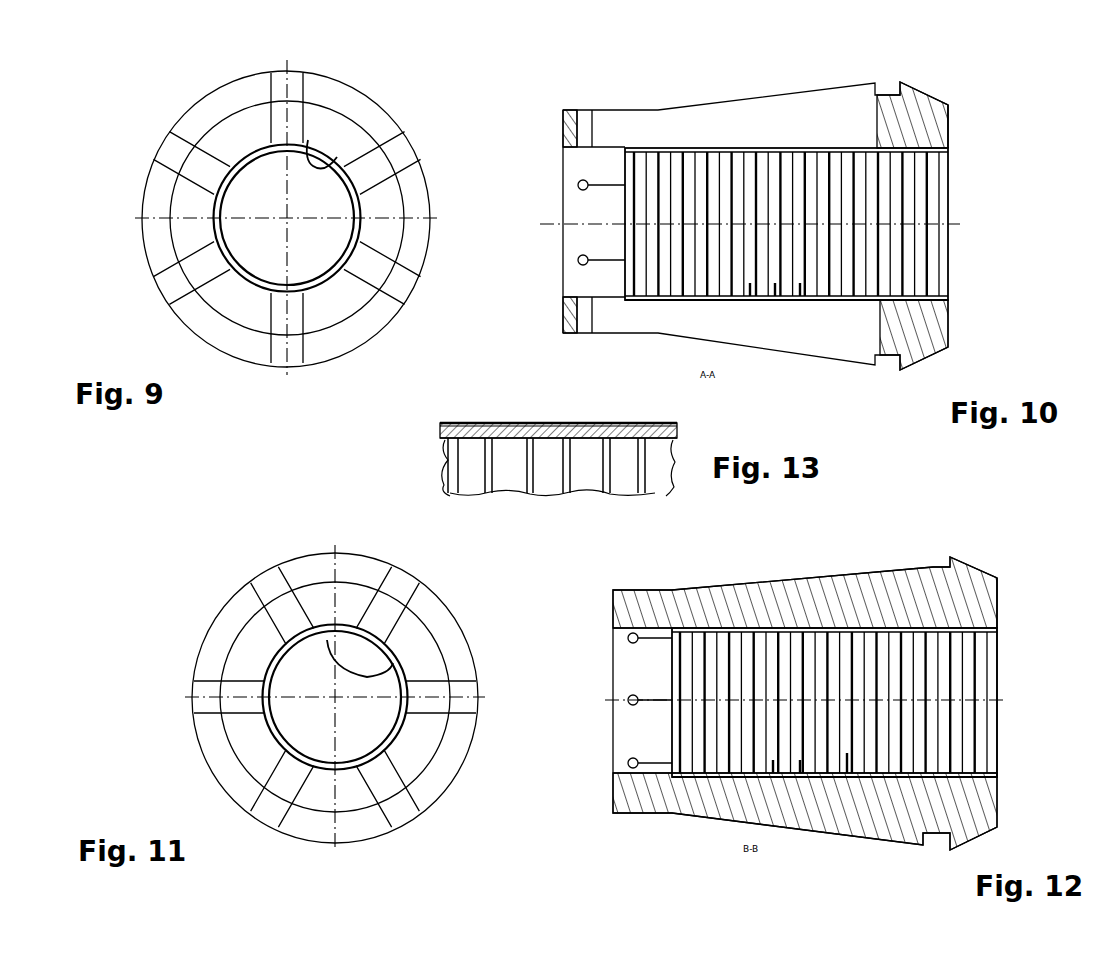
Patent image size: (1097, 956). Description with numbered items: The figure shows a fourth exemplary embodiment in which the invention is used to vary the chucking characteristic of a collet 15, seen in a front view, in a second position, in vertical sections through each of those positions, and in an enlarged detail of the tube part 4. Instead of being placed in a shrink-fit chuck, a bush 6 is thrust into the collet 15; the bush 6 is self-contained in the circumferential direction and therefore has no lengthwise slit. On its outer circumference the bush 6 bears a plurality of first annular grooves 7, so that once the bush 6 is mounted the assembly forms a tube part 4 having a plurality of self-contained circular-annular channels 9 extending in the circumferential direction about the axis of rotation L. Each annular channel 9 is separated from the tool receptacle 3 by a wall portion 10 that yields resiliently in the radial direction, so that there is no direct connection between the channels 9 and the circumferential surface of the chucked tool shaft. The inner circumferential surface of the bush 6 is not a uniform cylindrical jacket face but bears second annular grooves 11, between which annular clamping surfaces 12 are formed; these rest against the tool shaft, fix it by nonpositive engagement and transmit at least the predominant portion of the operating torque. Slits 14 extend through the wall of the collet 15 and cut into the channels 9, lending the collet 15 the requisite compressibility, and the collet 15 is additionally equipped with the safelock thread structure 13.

In FIG. 9, the tool receptacle 3 is at (246, 231).
In FIG. 11, the tool receptacle 3 is at (300, 732).
In FIG. 10, the tube part 4 is at (966, 152).
In FIG. 12, the tube part 4 is at (1010, 633).
In FIG. 10, the bush 6 is at (948, 300).
In FIG. 12, the bush 6 is at (997, 775).
In FIG. 13, the bush 6 is at (505, 432).
In FIG. 13, the first annular grooves 7 is at (548, 414).
In FIG. 10, the annular channels 9 is at (883, 130).
In FIG. 12, the annular channels 9 is at (933, 592).
In FIG. 13, the wall portion 10 is at (595, 423).
In FIG. 10, the second annular grooves 11 is at (800, 283).
In FIG. 12, the second annular grooves 11 is at (847, 753).
In FIG. 13, the second annular grooves 11 is at (655, 452).
In FIG. 10, the annular clamping surfaces 12 is at (813, 170).
In FIG. 12, the annular clamping surfaces 12 is at (800, 655).
In FIG. 13, the annular clamping surfaces 12 is at (470, 492).
In FIG. 9, the safelock thread structure 13 is at (308, 140).
In FIG. 11, the safelock thread structure 13 is at (327, 640).
In FIG. 10, the safelock thread structure 13 is at (596, 265).
In FIG. 9, the slits 14 is at (395, 127).
In FIG. 9, the collet 15 is at (143, 110).
In FIG. 11, the collet 15 is at (228, 561).
In FIG. 10, the collet 15 is at (694, 76).
In FIG. 12, the collet 15 is at (805, 703).
In FIG. 9, the axis of rotation L is at (287, 220).
In FIG. 11, the axis of rotation L is at (337, 700).
In FIG. 10, the axis of rotation L is at (948, 224).
In FIG. 12, the axis of rotation L is at (997, 700).